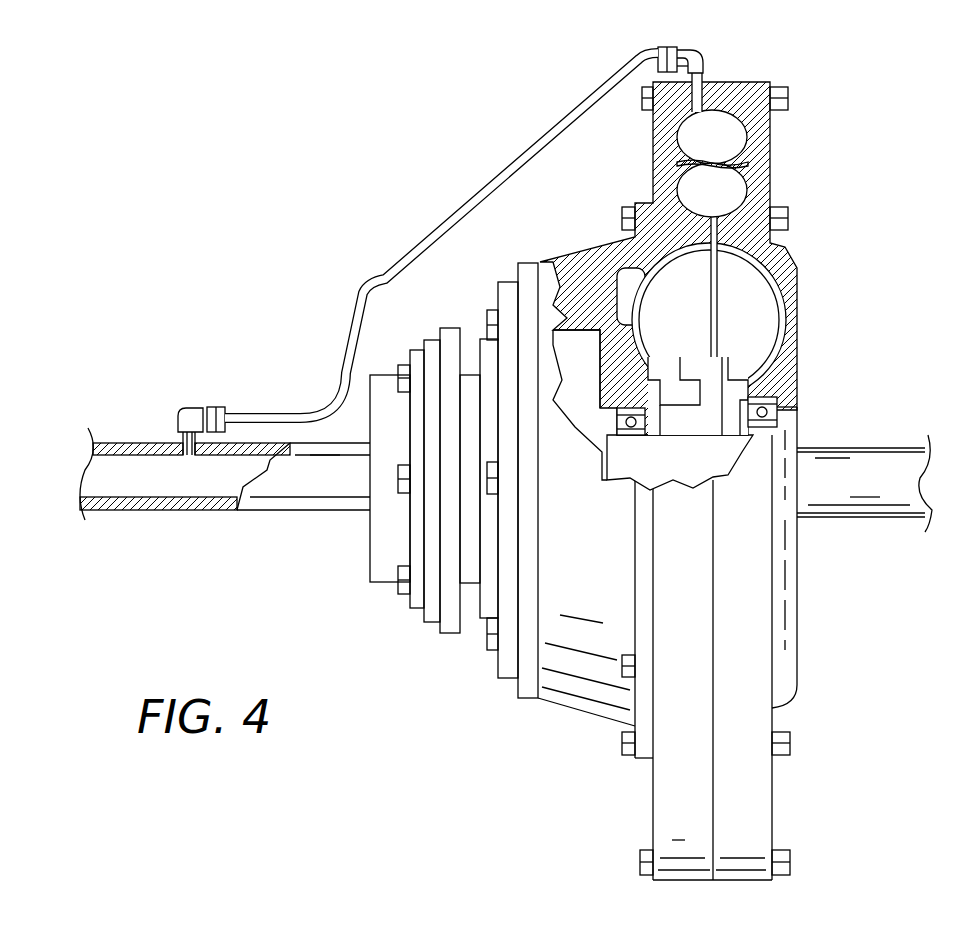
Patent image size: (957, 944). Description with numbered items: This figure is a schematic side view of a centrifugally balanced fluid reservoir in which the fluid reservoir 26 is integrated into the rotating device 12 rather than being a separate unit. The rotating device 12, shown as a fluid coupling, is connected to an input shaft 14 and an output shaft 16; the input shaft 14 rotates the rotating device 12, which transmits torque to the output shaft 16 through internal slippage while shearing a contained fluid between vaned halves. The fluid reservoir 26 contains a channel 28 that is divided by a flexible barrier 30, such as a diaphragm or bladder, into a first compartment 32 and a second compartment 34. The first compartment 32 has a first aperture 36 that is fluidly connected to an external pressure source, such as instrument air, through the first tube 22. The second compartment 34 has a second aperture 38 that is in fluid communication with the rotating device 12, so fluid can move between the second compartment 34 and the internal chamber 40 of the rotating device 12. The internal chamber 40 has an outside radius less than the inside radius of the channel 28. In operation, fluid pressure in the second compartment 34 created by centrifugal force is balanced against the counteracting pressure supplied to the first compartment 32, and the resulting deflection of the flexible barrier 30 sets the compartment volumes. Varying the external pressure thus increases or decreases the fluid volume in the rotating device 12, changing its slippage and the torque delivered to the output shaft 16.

The rotating device 12 is at (583, 571).
The input shaft 14 is at (122, 440).
The output shaft 16 is at (880, 463).
The first tube 22 is at (430, 240).
The fluid reservoir 26 is at (807, 157).
The channel 28 is at (773, 162).
The flexible barrier 30 is at (697, 170).
The first compartment 32 is at (722, 128).
The second compartment 34 is at (728, 188).
The first aperture 36 is at (695, 103).
The second aperture 38 is at (715, 230).
The internal chamber 40 is at (752, 303).